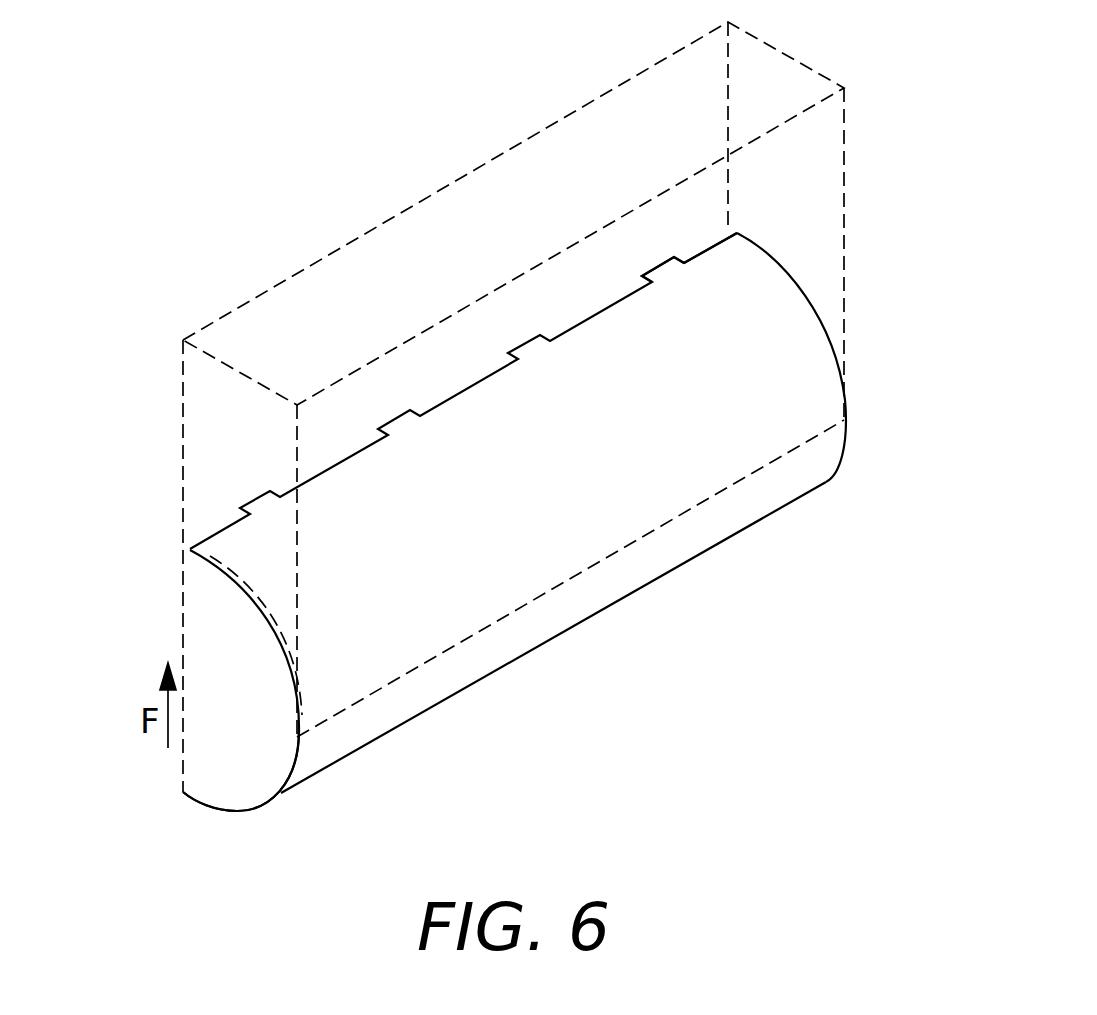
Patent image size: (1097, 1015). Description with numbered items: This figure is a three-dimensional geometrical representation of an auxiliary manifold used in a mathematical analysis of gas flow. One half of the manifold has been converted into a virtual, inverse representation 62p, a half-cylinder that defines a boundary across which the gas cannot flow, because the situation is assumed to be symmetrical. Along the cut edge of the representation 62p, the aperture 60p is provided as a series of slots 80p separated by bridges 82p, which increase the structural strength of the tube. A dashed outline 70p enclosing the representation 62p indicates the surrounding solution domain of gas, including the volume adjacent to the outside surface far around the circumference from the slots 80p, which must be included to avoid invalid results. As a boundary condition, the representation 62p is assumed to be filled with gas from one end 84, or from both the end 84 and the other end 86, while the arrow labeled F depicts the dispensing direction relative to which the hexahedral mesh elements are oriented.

The prismatic stock block outline 70p is at (222, 430).
The aperture 60p is at (188, 552).
The virtual representation of the manifold 62p is at (450, 698).
The slots 80p is at (722, 243).
The bridges 82p is at (663, 273).
The end 86 is at (822, 333).
The end 84 is at (240, 782).